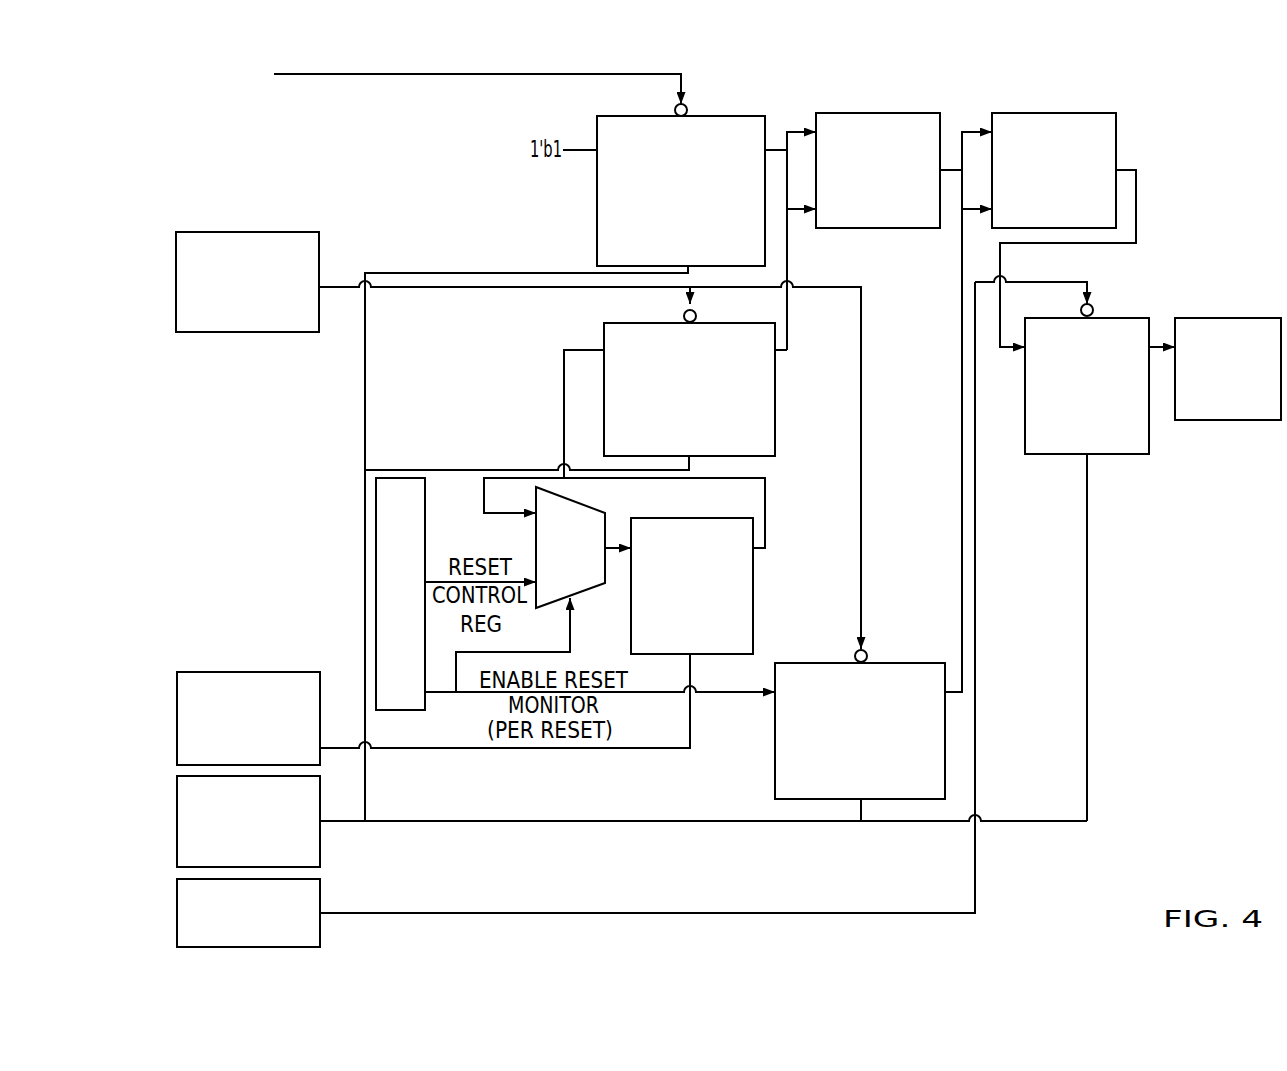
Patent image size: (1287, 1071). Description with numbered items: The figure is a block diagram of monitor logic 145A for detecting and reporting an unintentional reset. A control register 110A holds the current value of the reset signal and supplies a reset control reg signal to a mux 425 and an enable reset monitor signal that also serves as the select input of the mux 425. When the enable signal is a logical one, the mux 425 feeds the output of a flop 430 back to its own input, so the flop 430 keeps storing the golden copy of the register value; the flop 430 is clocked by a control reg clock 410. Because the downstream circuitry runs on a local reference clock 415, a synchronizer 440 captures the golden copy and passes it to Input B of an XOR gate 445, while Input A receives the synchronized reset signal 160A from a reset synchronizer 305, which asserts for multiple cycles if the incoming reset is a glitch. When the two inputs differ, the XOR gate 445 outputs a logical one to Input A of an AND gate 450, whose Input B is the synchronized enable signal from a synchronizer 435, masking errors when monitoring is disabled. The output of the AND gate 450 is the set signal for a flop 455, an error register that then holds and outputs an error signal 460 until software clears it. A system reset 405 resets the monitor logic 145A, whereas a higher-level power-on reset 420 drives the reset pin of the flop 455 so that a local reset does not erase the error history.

The synchronized reset signal 160A is at (432, 74).
The reset synchronizer 305 is at (703, 232).
The monitor logic 145A is at (858, 90).
The XOR gate 445 is at (897, 193).
The AND gate 450 is at (1073, 193).
The flop 455 is at (1108, 416).
The error signal 460 is at (1249, 404).
The system reset 405 is at (269, 319).
The synchronizer 440 is at (711, 420).
The mux 425 is at (596, 573).
The flop 430 is at (713, 615).
The control register 110A is at (427, 494).
The synchronizer 435 is at (882, 763).
The control reg clock 410 is at (177, 718).
The local reference clock 415 is at (177, 818).
The power-on reset 420 is at (177, 912).